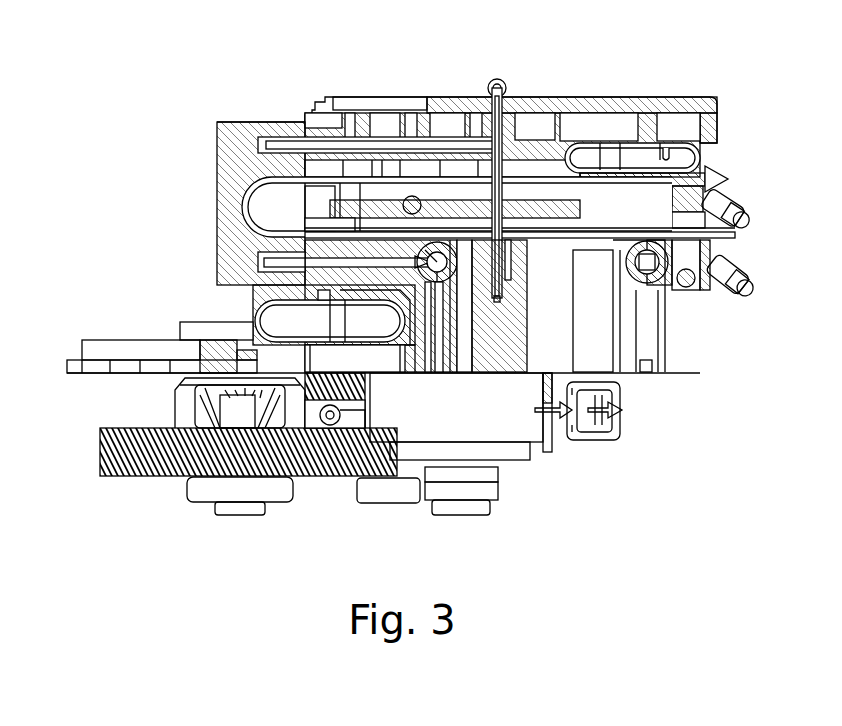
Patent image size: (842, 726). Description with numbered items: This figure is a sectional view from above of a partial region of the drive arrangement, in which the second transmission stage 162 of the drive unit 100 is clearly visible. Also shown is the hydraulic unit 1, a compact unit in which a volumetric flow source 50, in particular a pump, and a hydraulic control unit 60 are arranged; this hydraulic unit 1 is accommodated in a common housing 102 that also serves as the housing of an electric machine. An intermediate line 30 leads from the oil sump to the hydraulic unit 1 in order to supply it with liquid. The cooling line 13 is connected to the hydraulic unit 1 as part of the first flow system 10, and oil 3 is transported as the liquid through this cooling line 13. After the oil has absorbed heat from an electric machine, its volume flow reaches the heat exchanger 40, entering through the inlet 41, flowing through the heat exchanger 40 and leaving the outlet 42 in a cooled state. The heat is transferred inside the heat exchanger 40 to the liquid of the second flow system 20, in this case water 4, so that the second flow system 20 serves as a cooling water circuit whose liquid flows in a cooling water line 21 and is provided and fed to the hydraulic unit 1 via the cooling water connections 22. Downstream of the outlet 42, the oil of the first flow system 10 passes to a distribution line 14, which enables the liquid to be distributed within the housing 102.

The drive unit 100 is at (211, 88).
The water 4 is at (545, 175).
The heat exchanger 40 is at (232, 138).
The outlet 42 is at (278, 137).
The inlet 41 is at (285, 262).
The oil 3 is at (345, 262).
The cooling line 13 is at (430, 345).
The distribution line 14 is at (497, 150).
The second flow system 20 is at (735, 236).
The cooling water line 21 is at (510, 162).
The cooling water connections 22 is at (748, 212).
The common housing 102 is at (575, 320).
The intermediate line 30 is at (548, 423).
The hydraulic unit 1 is at (535, 420).
The volumetric flow source 50 is at (461, 483).
The hydraulic control unit 60 is at (461, 507).
The second transmission stage 162 is at (382, 468).
The first flow system 10 is at (445, 373).